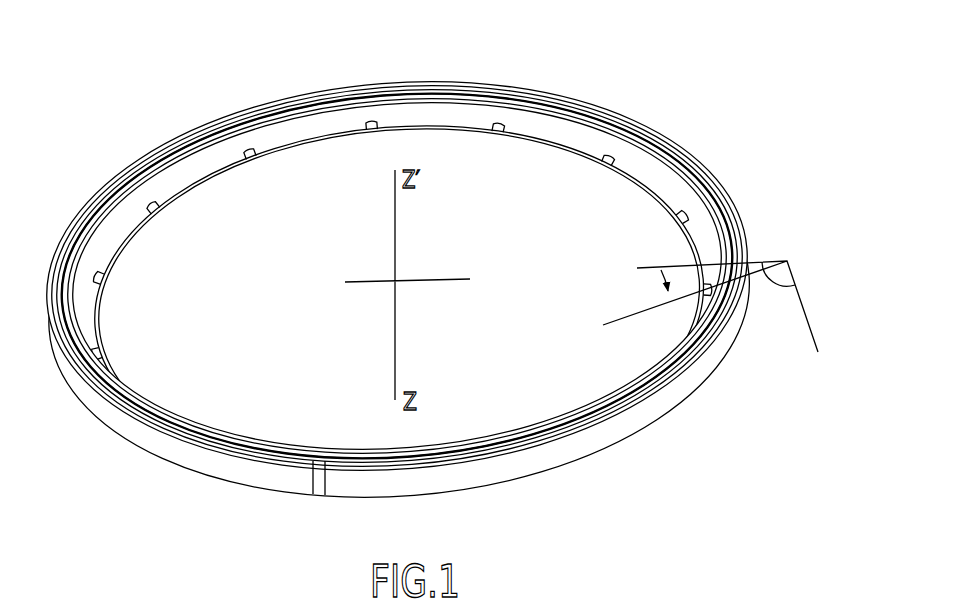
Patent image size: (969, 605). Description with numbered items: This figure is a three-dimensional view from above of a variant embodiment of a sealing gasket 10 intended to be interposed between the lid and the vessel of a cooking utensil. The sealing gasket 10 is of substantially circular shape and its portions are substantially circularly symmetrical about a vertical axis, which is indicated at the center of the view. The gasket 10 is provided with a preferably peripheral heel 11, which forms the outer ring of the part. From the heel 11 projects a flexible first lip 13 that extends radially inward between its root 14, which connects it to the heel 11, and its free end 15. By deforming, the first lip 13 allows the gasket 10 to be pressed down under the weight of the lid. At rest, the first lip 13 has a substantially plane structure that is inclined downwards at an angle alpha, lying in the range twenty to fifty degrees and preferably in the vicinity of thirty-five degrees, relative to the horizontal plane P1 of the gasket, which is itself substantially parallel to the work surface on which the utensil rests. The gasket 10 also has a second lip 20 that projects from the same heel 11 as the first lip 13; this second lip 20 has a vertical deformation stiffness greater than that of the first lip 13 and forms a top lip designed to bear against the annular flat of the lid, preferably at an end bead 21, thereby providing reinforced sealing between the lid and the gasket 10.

The sealing gasket 10 is at (398, 270).
The heel 11 is at (574, 452).
The first lip 13 is at (122, 218).
The root 14 is at (204, 144).
The free end 15 is at (316, 144).
The second lip 20 is at (142, 402).
The end bead 21 is at (153, 401).
The horizontal plane of the gasket P1 is at (771, 262).
The angle of inclination of the first lip alpha is at (661, 270).